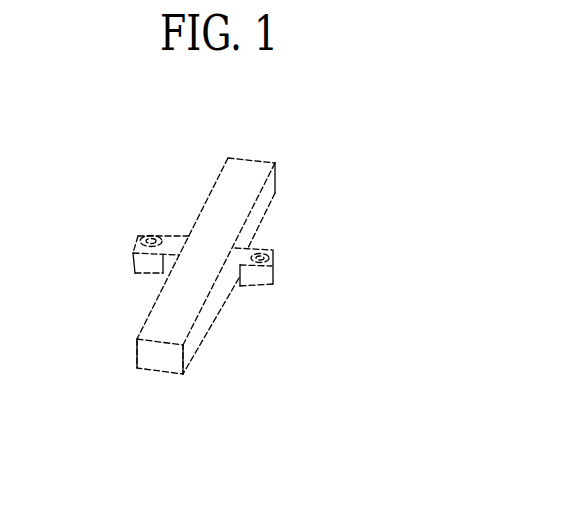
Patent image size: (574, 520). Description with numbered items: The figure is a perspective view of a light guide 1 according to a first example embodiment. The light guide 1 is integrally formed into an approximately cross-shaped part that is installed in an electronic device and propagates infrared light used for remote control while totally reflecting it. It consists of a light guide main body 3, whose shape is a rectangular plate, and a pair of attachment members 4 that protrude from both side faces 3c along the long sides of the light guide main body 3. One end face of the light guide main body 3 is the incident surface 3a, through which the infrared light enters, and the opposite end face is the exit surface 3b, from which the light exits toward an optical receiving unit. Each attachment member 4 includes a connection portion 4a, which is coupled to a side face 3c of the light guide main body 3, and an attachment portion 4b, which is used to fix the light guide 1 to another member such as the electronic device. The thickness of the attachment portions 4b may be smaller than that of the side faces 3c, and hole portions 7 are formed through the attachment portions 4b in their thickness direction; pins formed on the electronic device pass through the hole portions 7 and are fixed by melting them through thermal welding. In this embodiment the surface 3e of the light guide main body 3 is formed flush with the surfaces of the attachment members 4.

The light guide 1 is at (149, 152).
The light guide main body 3 is at (246, 170).
The incident surface 3a is at (168, 366).
The exit surface 3b is at (262, 161).
The side faces 3c is at (140, 320).
The surface of light guide main body 3e is at (245, 197).
The attachment members 4 is at (65, 222).
The connection portions 4a is at (172, 252).
The attachment portions 4b is at (143, 262).
The hole portions 7 is at (153, 237).